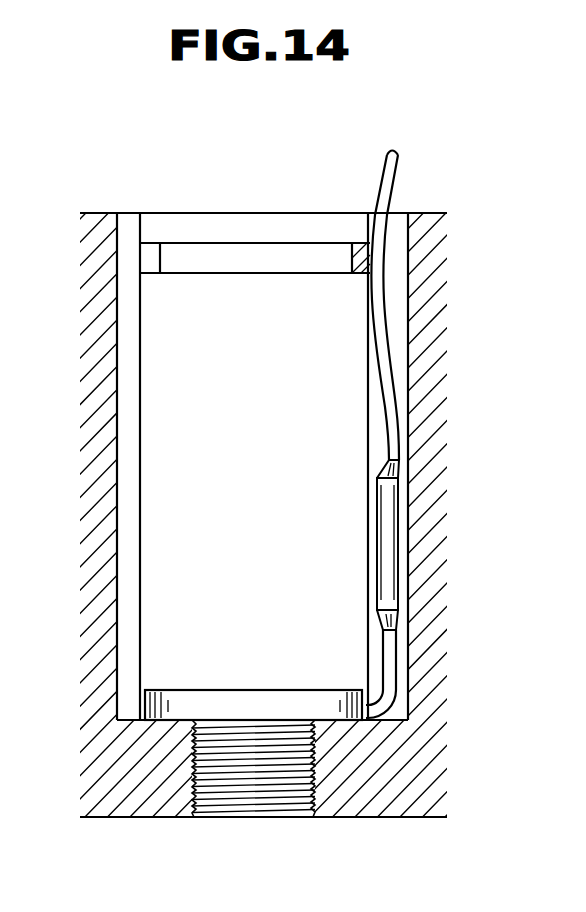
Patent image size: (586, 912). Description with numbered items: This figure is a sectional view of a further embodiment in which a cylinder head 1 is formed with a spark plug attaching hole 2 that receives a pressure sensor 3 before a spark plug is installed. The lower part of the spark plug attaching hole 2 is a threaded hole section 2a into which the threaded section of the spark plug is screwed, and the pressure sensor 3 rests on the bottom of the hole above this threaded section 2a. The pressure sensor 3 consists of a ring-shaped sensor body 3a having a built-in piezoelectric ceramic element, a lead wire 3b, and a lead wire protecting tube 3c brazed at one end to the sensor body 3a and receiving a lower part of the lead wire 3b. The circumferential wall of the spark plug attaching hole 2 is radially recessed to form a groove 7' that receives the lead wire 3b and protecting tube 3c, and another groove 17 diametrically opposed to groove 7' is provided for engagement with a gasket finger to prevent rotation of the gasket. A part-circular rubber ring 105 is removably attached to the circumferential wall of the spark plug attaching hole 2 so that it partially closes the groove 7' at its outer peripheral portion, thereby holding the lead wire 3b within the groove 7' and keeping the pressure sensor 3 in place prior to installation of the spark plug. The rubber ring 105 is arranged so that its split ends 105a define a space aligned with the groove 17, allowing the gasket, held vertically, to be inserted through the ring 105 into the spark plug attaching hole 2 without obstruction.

The cylinder head 1 is at (437, 252).
The groove 7' is at (452, 466).
The spark plug attaching hole 2 is at (150, 386).
The lower threaded hole section 2a is at (207, 790).
The groove 17 is at (117, 428).
The part-circular rubber ring 105 is at (353, 258).
The split ends 105a is at (148, 255).
The pressure sensor 3 is at (221, 690).
The sensor body 3a is at (323, 690).
The lead wire 3b is at (383, 403).
The lead wire protecting tube 3c is at (392, 553).